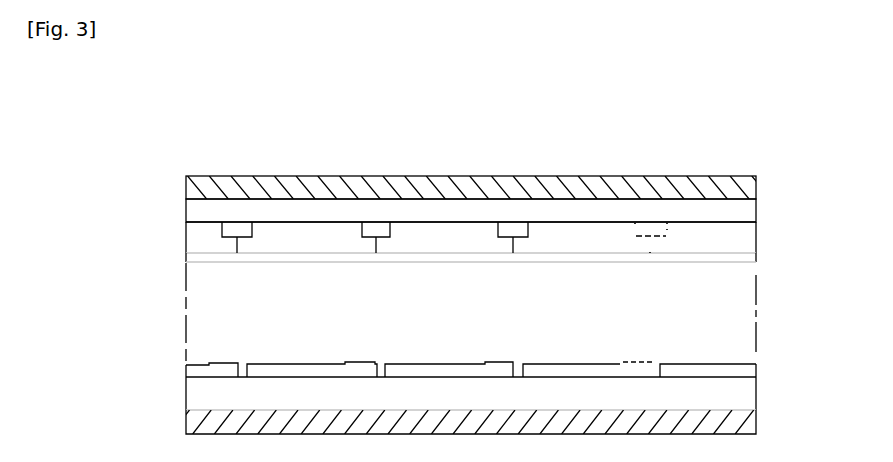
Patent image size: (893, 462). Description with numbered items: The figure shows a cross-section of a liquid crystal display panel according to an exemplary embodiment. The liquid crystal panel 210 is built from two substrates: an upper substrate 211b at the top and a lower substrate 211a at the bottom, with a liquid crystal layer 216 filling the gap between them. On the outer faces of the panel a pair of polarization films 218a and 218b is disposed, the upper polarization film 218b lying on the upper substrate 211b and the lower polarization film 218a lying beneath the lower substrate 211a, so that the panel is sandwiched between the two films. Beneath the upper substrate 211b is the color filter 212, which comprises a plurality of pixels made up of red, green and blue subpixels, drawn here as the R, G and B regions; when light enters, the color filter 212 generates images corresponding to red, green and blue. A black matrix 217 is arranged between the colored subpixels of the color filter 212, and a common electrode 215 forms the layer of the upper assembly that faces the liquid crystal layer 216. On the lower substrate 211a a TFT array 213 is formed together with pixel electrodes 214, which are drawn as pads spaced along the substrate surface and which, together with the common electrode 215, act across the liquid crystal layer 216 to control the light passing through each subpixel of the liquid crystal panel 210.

The liquid crystal panel 210 is at (597, 156).
The polarization film 218b is at (233, 182).
The upper substrate 211b is at (359, 208).
The color filter 212 is at (282, 226).
The black matrix 217 is at (515, 227).
The common electrode 215 is at (258, 263).
The liquid crystal layer 216 is at (192, 302).
The pixel electrode 214 is at (282, 364).
The TFT array 213 is at (223, 368).
The lower substrate 211a is at (193, 388).
The polarization film 218a is at (192, 432).